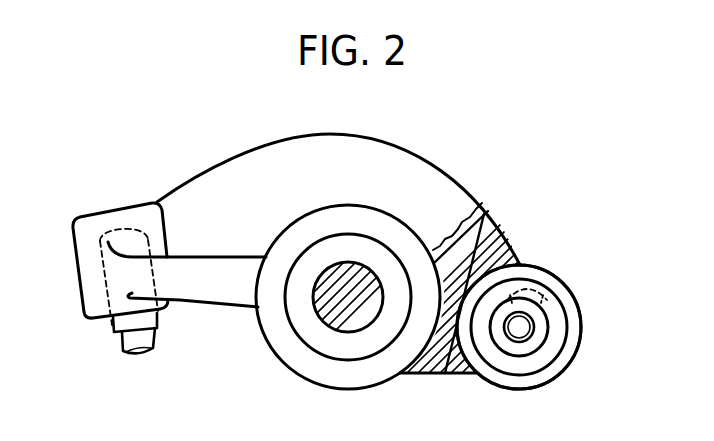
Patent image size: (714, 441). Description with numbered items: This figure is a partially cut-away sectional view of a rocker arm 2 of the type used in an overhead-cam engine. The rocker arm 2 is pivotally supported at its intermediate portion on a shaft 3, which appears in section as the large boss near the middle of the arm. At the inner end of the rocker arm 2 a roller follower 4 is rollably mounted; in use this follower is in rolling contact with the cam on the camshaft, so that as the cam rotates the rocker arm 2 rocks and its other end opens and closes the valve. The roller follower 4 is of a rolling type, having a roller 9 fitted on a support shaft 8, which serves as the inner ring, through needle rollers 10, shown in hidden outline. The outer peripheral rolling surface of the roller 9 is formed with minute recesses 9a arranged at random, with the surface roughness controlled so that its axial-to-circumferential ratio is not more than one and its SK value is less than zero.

The rocker arm 2 is at (222, 180).
The shaft 3 is at (337, 313).
The roller follower 4 is at (543, 329).
The support shaft 8 is at (540, 317).
The roller 9 is at (567, 352).
The minute recesses 9a is at (505, 388).
The needle rollers 10 is at (530, 282).